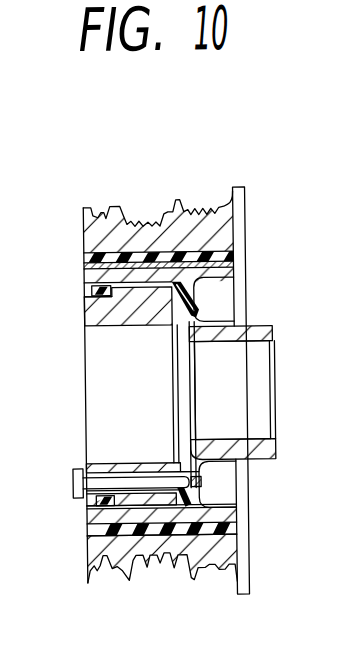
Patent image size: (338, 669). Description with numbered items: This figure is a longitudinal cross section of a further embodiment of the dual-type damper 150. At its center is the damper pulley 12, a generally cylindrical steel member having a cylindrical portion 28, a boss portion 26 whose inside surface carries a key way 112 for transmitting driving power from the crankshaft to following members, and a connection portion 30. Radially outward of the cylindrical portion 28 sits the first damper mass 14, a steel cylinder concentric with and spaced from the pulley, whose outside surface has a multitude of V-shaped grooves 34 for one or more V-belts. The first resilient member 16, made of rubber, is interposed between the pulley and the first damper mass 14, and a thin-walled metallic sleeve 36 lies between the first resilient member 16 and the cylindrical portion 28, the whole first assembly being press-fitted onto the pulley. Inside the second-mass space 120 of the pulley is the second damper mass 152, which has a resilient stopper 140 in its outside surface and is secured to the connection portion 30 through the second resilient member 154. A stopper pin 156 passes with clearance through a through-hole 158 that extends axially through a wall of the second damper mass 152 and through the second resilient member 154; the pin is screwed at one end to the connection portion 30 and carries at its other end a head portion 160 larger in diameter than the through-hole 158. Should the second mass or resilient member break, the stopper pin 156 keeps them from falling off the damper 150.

The dual-type damper 150 is at (212, 150).
The V-shaped grooves 34 is at (101, 206).
The first damper mass 14 is at (235, 231).
The first resilient member 16 is at (225, 256).
The metallic sleeve 36 is at (90, 262).
The cylindrical portion 28 is at (92, 278).
The resilient stopper 140 is at (100, 296).
The second damper mass 152 is at (86, 320).
The second resilient member 154 is at (198, 310).
The key way 112 is at (233, 345).
The boss portion 26 is at (262, 453).
The damper pulley 12 is at (280, 367).
The second-mass space 120 is at (145, 393).
The stopper pin 156 is at (147, 460).
The through-hole 158 is at (100, 480).
The head portion 160 is at (73, 482).
The connection portion 30 is at (202, 493).